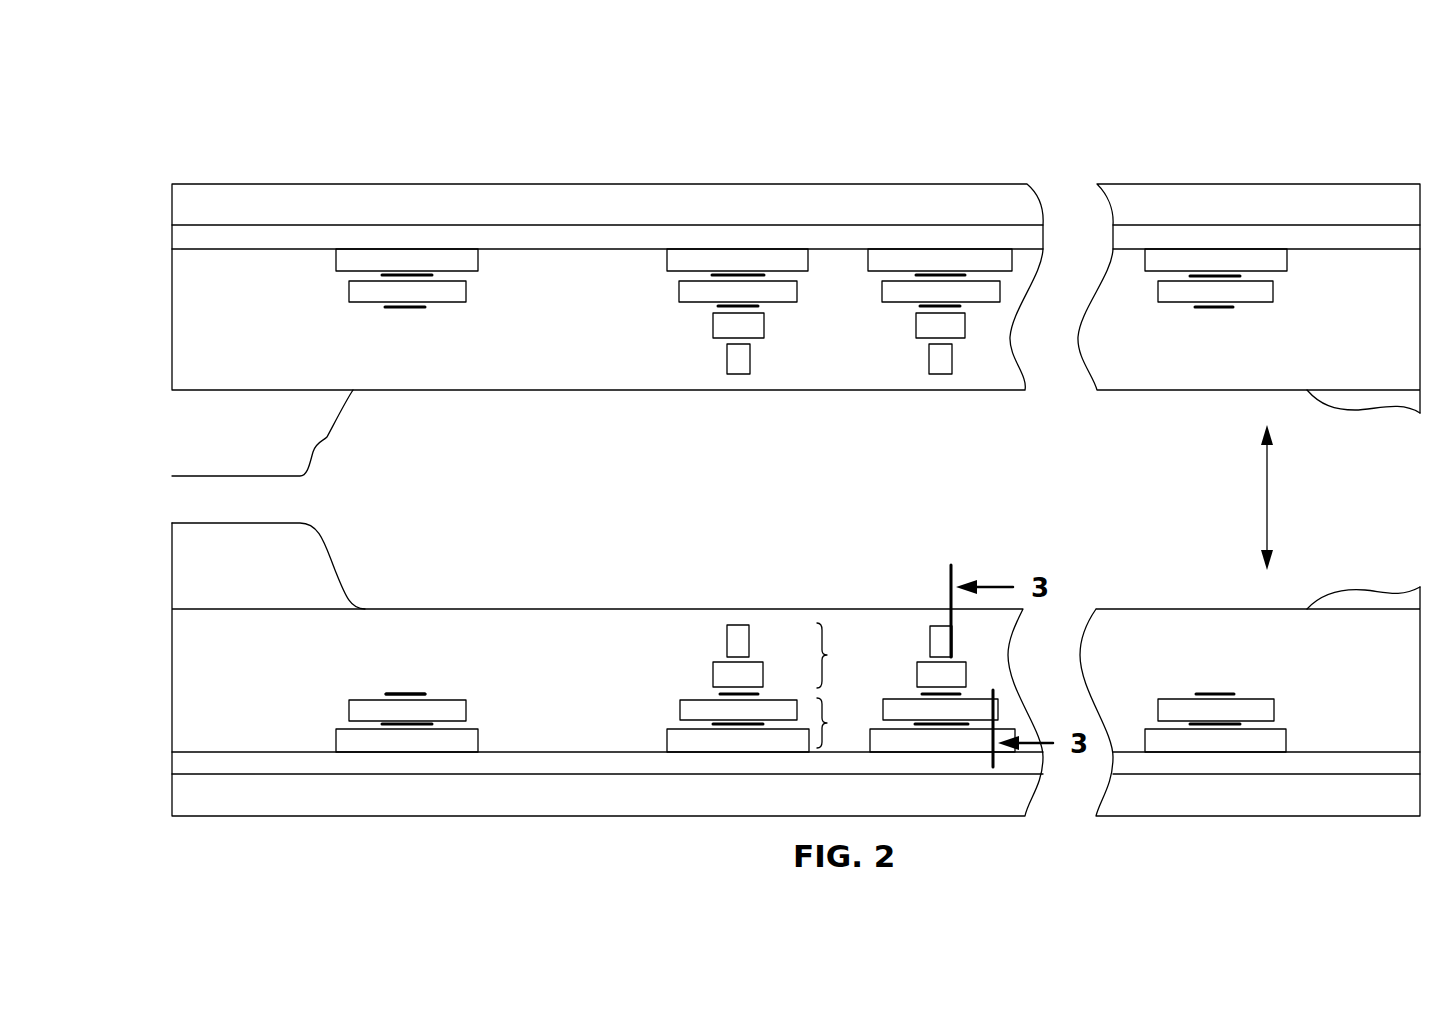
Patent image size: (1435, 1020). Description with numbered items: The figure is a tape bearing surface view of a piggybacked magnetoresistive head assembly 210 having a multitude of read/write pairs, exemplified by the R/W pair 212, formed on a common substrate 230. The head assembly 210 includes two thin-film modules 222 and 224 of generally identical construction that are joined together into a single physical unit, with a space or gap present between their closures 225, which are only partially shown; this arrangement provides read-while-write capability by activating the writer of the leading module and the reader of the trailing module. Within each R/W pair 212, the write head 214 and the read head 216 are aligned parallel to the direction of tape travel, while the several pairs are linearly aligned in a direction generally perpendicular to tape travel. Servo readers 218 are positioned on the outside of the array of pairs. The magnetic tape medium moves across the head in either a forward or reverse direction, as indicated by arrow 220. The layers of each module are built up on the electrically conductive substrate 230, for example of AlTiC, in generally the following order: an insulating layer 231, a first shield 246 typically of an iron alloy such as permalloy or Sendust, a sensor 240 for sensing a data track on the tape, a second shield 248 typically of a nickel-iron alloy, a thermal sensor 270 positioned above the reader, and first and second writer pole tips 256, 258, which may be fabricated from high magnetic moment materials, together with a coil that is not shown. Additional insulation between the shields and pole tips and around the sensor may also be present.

The magnetoresistive head assembly 210 is at (240, 152).
The R/W pair 212 is at (712, 627).
The write head 214 is at (864, 664).
The read head 216 is at (864, 726).
The servo reader 218 is at (471, 680).
The arrow indicating direction of tape travel 220 is at (1269, 507).
The thin-film module 222 is at (1300, 184).
The thin-film module 224 is at (1290, 816).
The closure 225 is at (327, 437).
The substrate 230 is at (358, 217).
The insulating layer 231 is at (1396, 734).
The sensor 240 is at (664, 718).
The first shield 246 is at (667, 740).
The second shield 248 is at (680, 707).
The first writer pole tip 256 is at (713, 678).
The second writer pole tip 258 is at (727, 650).
The thermal sensor 270 is at (395, 692).